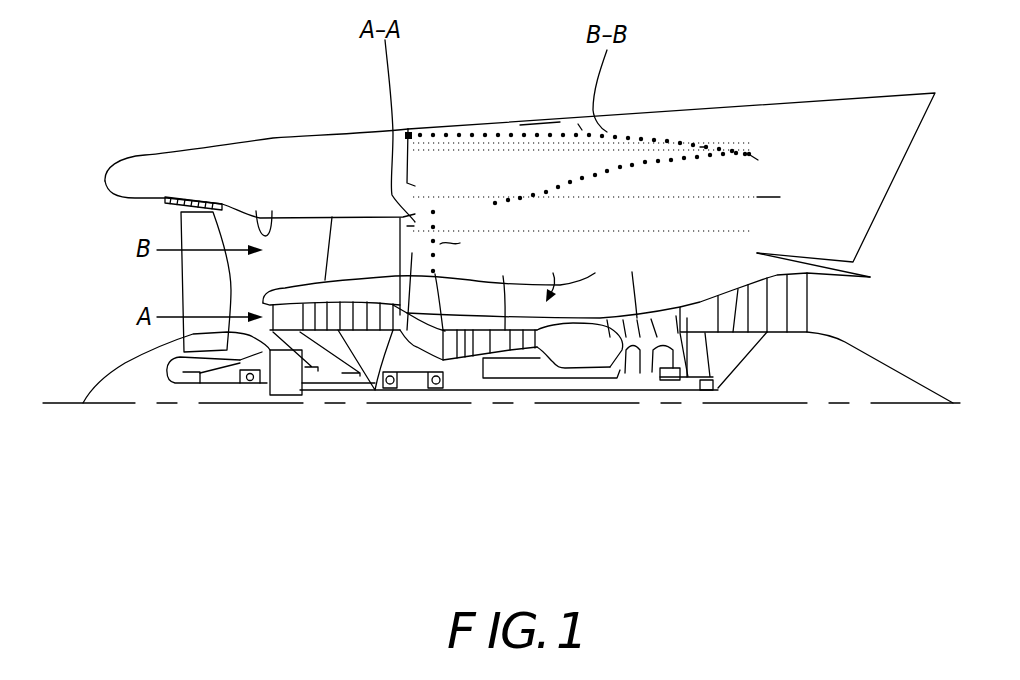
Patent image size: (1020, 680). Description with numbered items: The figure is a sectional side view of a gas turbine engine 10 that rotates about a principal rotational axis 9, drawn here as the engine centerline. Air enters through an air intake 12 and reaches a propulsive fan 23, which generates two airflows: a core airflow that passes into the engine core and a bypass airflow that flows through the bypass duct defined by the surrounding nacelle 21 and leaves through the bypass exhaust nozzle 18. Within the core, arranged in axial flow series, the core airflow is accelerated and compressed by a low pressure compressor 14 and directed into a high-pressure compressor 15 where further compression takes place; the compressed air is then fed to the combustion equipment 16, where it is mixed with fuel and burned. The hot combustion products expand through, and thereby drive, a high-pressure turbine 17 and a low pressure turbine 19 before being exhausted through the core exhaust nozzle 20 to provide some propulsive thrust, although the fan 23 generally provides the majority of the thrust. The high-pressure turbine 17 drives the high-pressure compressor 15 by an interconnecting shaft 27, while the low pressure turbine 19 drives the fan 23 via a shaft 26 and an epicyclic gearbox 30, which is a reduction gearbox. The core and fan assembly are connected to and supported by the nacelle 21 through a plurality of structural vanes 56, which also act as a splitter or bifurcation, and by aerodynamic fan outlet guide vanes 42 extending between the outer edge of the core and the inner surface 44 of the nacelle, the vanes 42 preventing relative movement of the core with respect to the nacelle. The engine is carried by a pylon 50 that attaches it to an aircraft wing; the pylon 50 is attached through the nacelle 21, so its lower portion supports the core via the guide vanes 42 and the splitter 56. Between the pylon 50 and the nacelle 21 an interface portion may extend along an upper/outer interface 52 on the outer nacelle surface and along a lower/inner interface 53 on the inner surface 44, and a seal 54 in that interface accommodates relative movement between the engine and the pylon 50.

The principal rotational axis 9 is at (755, 407).
The gas turbine engine 10 is at (181, 146).
The air intake 12 is at (128, 229).
The low pressure compressor 14 is at (357, 305).
The high-pressure compressor 15 is at (495, 132).
The combustion equipment 16 is at (577, 342).
The high-pressure turbine 17 is at (660, 132).
The bypass exhaust nozzle 18 is at (770, 198).
The low pressure turbine 19 is at (777, 295).
The core exhaust nozzle 20 is at (850, 306).
The nacelle 21 is at (430, 130).
The propulsive fan 23 is at (187, 282).
The shaft 26 is at (495, 392).
The interconnecting shaft 27 is at (535, 380).
The epicyclic gearbox 30 is at (283, 383).
The fan outlet guide vanes 42 is at (320, 238).
The inner surface of the nacelle 44 is at (270, 230).
The pylon 50 is at (832, 97).
The upper/outer interface 52 is at (708, 132).
The lower/inner interface 53 is at (758, 160).
The seal 54 is at (538, 130).
The structural vanes 56 is at (375, 390).